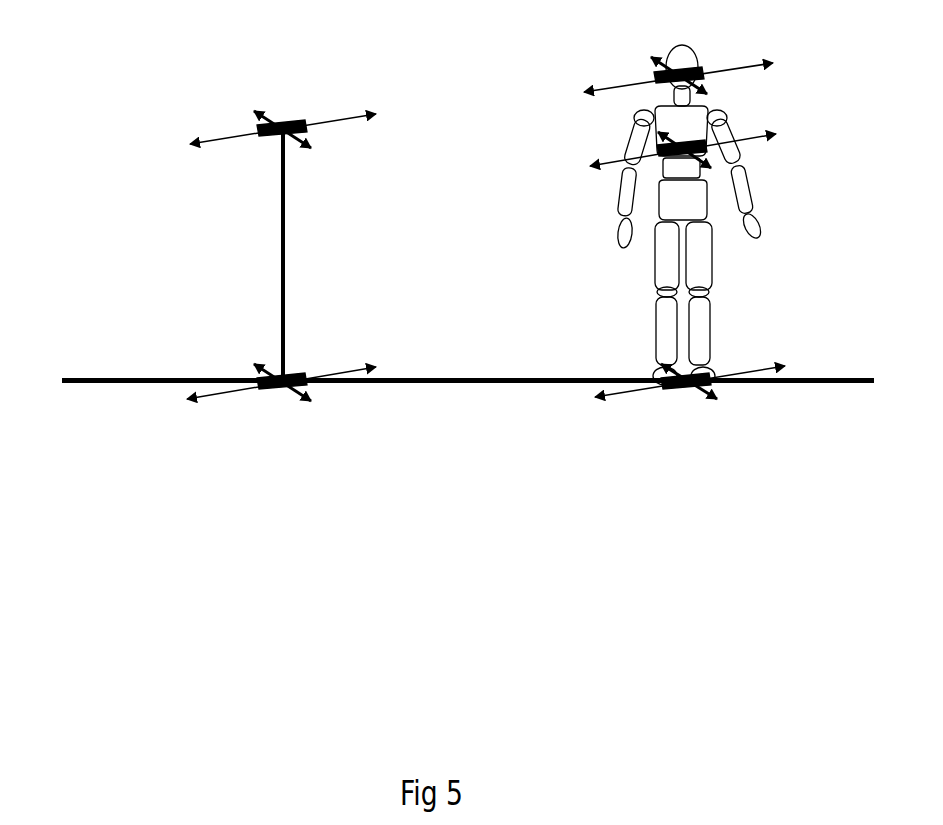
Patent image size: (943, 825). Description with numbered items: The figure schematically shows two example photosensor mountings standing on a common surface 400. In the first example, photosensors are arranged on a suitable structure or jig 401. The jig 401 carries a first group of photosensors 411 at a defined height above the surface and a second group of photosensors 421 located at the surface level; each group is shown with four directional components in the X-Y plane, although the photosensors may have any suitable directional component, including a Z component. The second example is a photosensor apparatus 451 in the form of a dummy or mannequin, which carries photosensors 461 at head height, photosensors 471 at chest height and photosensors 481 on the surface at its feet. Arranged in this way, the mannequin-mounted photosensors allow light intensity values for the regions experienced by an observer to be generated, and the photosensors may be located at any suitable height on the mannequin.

The ground surface 400 is at (458, 413).
The structure or jig 401 is at (190, 191).
The first group of photosensors 411 is at (283, 155).
The second group of photosensors 421 is at (268, 354).
The second example photosensor apparatus 451 is at (618, 197).
The photosensors 461 is at (678, 50).
The photosensors 471 is at (706, 165).
The photosensors 481 is at (690, 356).